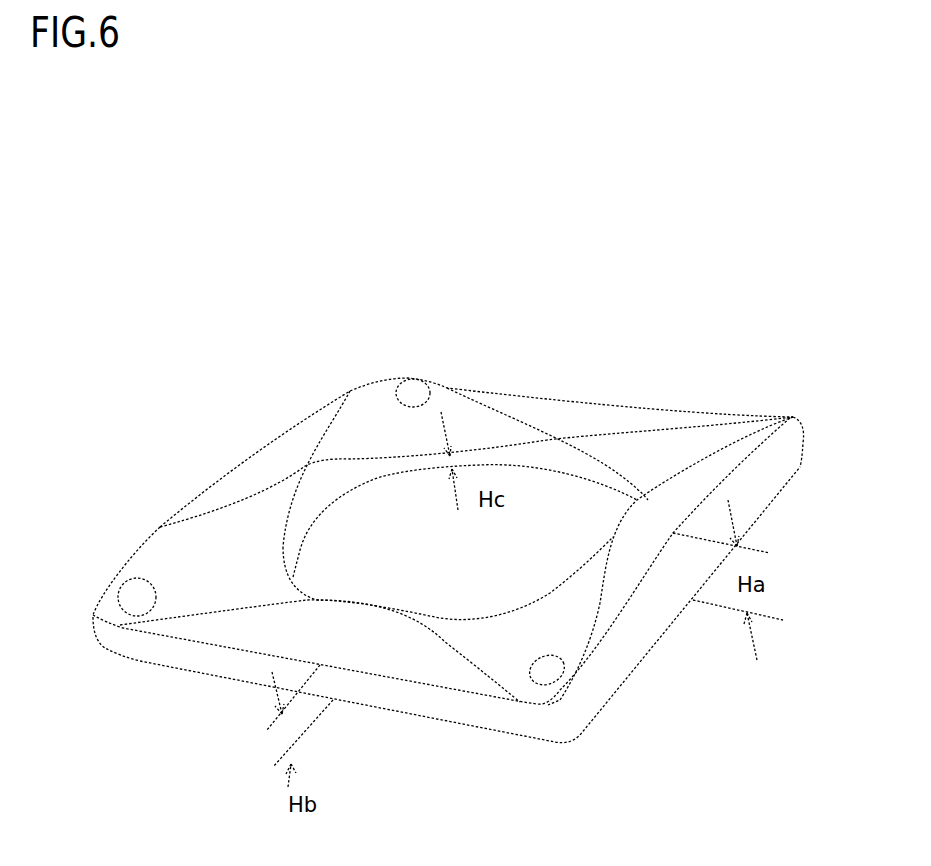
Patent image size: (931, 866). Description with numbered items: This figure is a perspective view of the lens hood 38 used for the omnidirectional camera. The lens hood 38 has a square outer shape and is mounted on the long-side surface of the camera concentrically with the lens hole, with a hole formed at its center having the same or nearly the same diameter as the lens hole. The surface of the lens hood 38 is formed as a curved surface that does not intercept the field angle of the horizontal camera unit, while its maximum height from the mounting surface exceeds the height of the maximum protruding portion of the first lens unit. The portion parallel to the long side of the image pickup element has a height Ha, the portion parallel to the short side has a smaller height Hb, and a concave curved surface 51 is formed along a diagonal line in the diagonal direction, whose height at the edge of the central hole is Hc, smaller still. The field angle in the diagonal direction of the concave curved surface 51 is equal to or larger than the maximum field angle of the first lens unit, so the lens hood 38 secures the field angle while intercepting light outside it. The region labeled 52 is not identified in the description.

The lens hood 38 is at (447, 388).
The concave curved surface 51 is at (395, 430).
The recess 52 is at (463, 569).